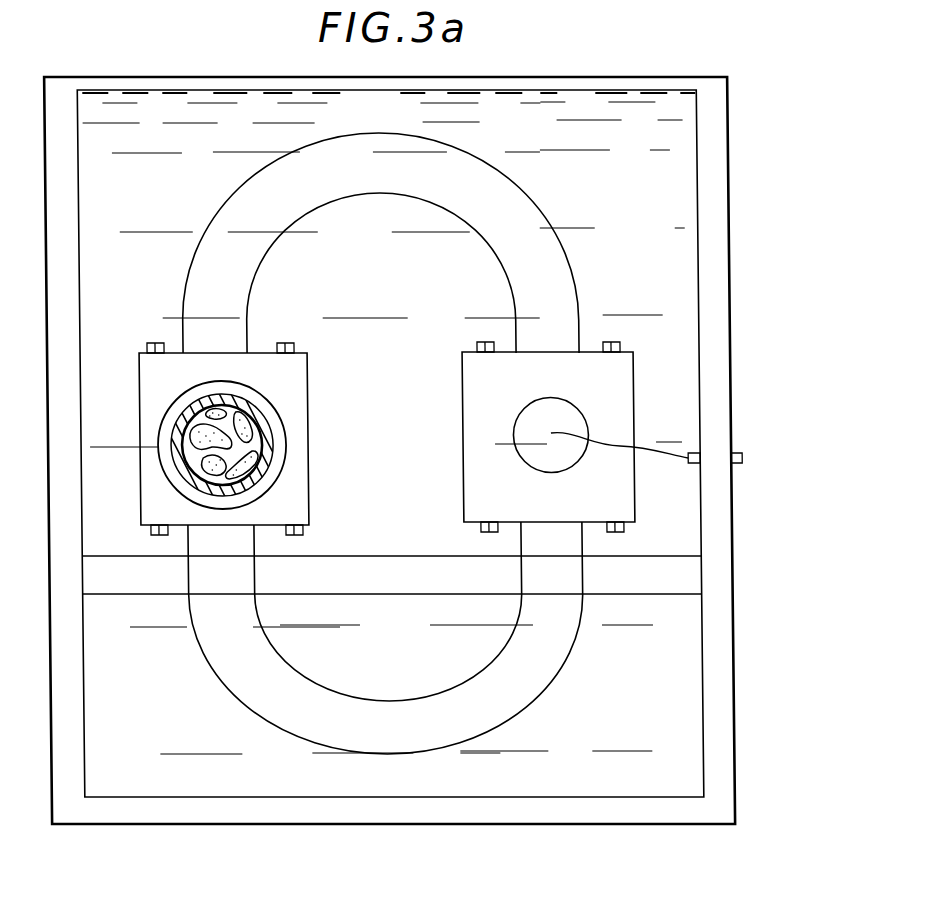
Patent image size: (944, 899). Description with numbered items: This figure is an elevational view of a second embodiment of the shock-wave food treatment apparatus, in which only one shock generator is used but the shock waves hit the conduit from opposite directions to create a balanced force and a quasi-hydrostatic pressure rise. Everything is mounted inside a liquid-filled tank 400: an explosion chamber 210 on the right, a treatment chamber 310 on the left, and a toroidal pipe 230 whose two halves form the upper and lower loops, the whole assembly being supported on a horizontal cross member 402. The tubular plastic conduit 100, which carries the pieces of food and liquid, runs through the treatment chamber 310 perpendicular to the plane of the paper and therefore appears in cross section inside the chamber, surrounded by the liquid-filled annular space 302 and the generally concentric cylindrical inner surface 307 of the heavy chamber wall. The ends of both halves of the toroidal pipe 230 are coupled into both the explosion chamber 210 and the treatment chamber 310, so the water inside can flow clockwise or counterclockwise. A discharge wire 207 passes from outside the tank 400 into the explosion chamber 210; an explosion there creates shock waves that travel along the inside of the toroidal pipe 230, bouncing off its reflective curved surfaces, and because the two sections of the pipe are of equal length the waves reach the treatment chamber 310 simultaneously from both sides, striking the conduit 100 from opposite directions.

The tubular plastic conduit 100 is at (265, 468).
The discharge wire 207 is at (742, 453).
The explosion chamber 210 is at (480, 428).
The toroidal pipe 230 is at (369, 150).
The annular space 302 is at (277, 440).
The cylindrical inner surface 307 is at (258, 396).
The treatment chamber 310 is at (309, 412).
The tank 400 is at (724, 128).
The cross member 402 is at (657, 586).